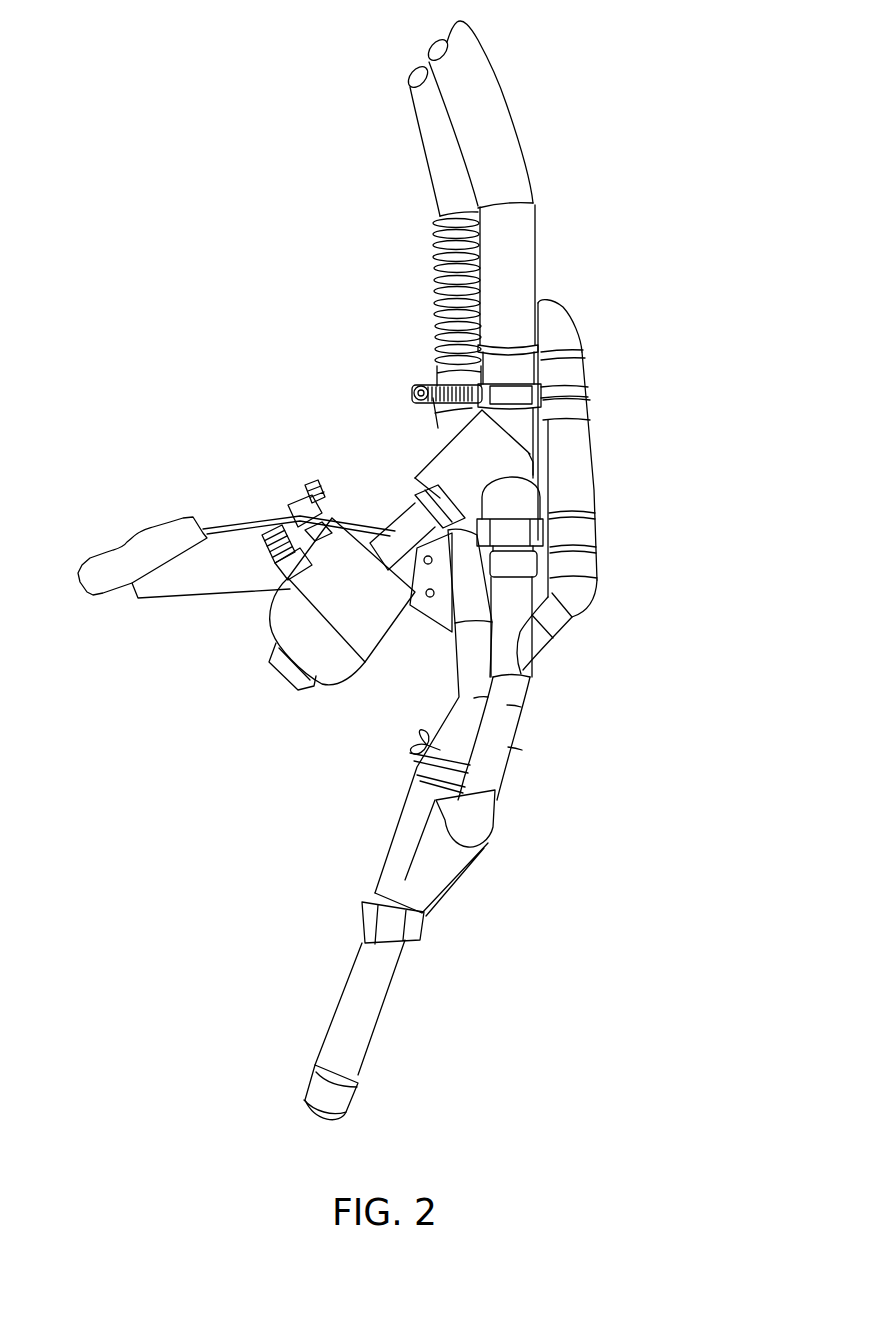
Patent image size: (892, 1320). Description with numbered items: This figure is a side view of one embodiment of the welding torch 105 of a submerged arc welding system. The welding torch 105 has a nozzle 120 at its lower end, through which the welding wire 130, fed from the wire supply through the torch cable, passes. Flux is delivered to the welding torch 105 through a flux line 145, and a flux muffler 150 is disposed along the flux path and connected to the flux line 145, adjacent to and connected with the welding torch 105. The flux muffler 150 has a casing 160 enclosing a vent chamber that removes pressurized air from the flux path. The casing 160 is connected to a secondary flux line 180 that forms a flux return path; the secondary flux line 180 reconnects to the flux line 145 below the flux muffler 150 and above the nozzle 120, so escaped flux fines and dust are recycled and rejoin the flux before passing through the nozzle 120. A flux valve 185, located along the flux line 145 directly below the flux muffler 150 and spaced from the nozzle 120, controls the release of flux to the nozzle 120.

The welding torch 105 is at (647, 318).
The nozzle 120 is at (392, 1022).
The welding wire 130 is at (433, 123).
The flux line 145 is at (477, 74).
The flux muffler 150 is at (552, 226).
The casing 160 is at (525, 272).
The secondary flux line 180 is at (582, 460).
The flux valve 185 is at (334, 676).